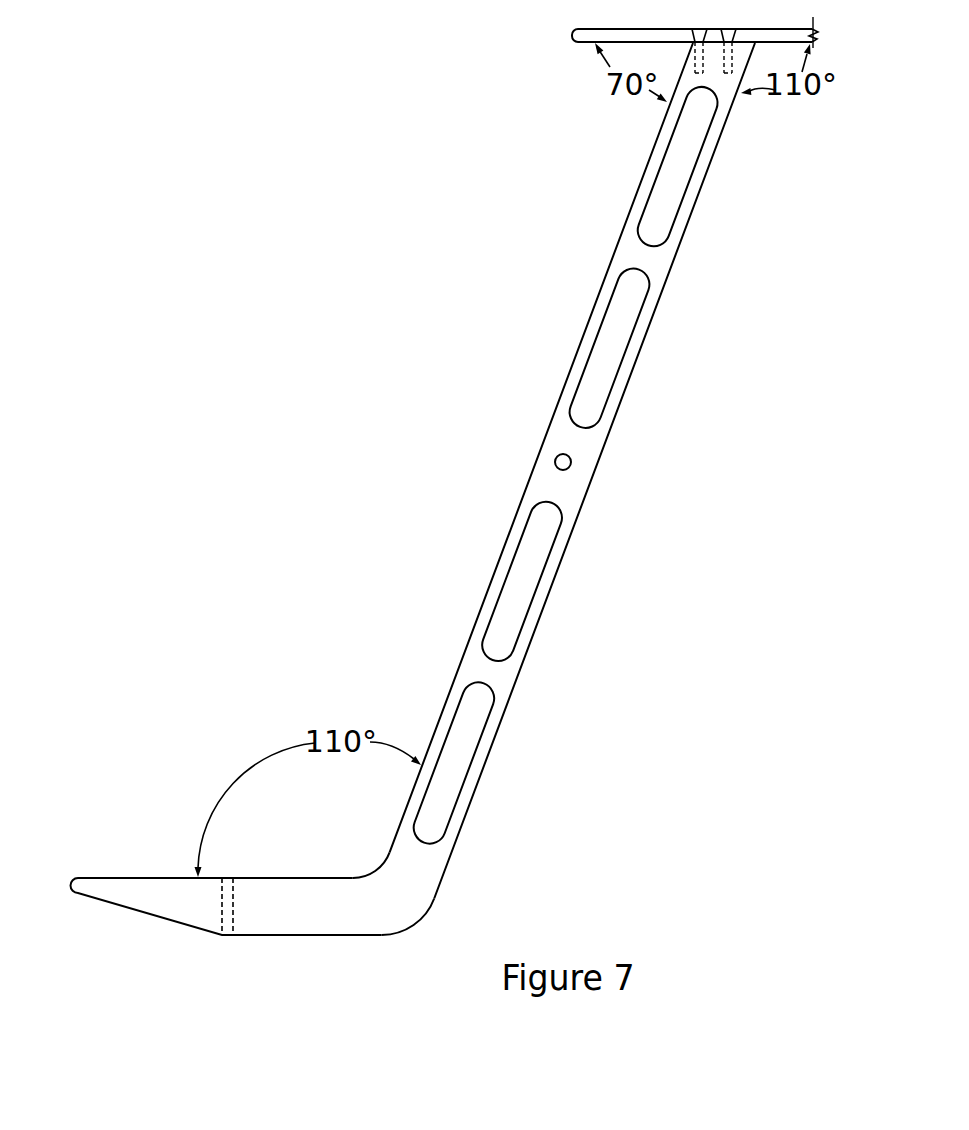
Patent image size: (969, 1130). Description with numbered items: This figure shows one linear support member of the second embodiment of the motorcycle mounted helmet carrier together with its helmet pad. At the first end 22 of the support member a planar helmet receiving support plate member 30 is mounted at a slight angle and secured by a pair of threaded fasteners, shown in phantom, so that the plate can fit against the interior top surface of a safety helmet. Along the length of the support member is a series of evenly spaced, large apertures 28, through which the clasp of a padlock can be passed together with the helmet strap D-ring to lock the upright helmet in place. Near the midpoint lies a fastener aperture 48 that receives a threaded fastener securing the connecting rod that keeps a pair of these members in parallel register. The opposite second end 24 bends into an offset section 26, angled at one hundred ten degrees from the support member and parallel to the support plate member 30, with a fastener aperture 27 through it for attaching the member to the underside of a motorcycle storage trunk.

The helmet receiving support plate member 30 is at (600, 29).
The first end 22 is at (688, 80).
The large apertures 28 is at (655, 232).
The fastener aperture 48 is at (571, 462).
The second end 24 is at (398, 875).
The offset section 26 is at (152, 888).
The fastener aperture 27 is at (233, 913).